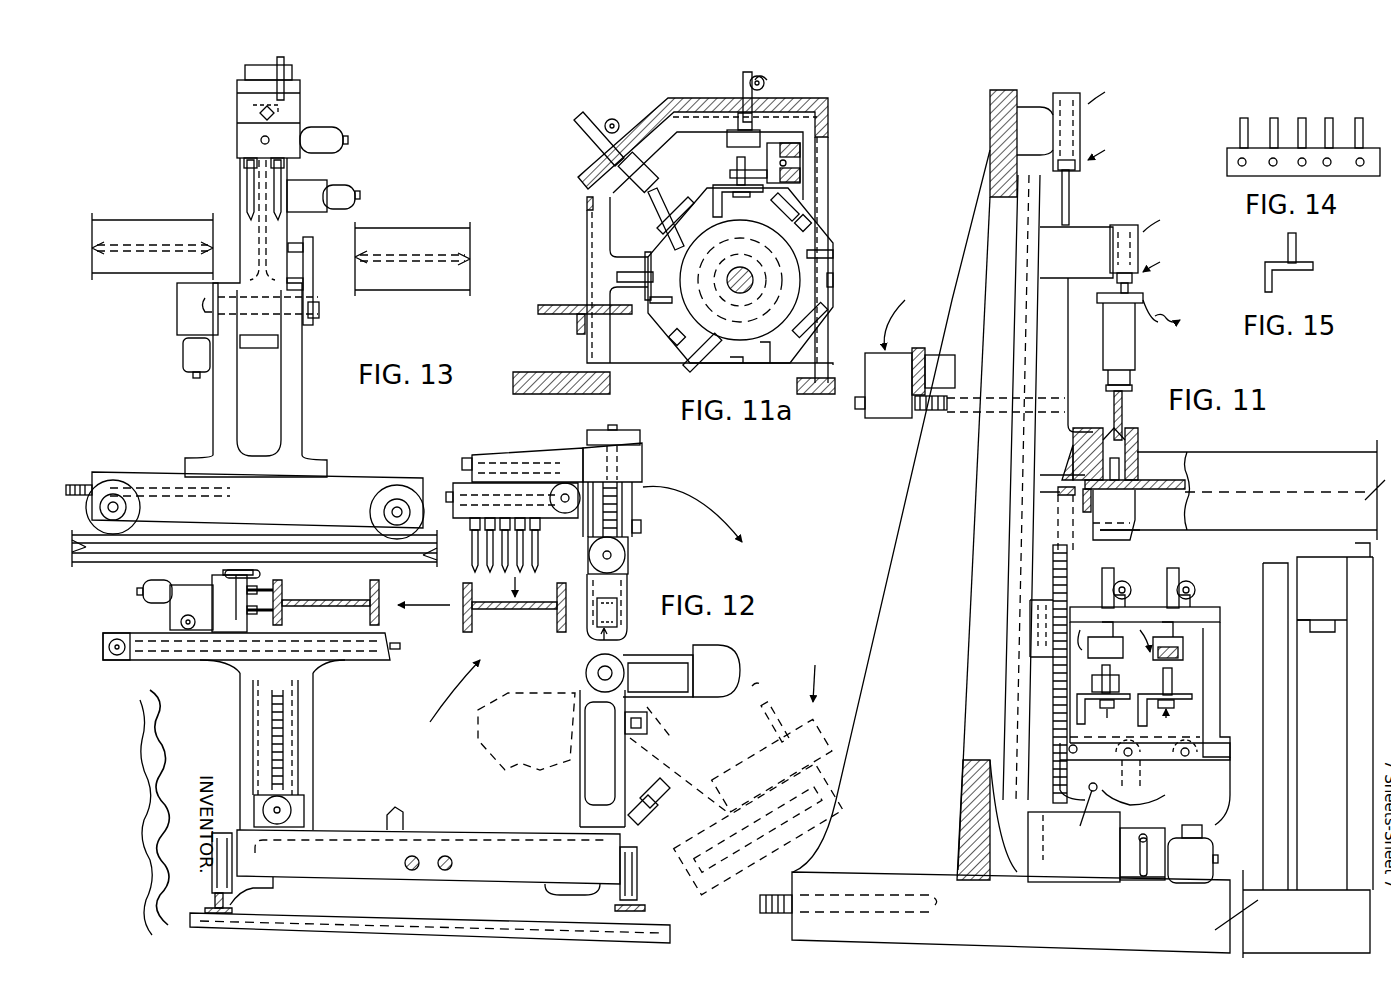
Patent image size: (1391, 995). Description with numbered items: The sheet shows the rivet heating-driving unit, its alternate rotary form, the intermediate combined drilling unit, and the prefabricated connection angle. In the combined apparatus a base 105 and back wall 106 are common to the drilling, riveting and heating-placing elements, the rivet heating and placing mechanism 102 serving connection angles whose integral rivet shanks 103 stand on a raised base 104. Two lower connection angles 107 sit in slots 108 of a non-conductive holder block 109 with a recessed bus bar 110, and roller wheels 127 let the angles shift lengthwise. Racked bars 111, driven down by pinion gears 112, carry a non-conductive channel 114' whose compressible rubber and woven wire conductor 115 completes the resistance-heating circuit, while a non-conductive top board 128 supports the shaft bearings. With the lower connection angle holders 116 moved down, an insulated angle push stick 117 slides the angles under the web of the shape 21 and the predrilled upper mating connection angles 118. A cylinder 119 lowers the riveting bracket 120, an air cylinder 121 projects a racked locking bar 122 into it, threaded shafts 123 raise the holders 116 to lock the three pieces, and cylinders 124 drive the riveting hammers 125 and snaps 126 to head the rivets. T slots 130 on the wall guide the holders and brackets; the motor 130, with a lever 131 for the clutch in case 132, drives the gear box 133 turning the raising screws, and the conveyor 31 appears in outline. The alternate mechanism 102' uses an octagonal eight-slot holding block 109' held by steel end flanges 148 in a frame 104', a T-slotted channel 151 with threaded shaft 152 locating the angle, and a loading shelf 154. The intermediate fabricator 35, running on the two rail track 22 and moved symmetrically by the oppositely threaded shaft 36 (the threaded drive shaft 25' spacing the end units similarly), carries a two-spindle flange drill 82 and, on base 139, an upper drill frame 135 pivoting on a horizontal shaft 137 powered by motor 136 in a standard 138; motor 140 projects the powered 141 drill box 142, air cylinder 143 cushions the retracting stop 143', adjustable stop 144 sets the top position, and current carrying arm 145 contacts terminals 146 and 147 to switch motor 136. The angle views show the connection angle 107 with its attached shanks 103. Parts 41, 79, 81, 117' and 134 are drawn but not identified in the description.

In FIG. 13, the raw shapes 21 is at (415, 228).
In FIG. 12, the raw shapes 21 is at (366, 598).
In FIG. 12, the two rail track 22 is at (638, 906).
In FIG. 12, the threaded drive shaft 25' is at (390, 862).
In FIG. 11, the dual conveyor belts 31 is at (1330, 598).
In FIG. 12, the intermediate combined drilling fabricators 35 is at (432, 697).
In FIG. 12, the oppositely threaded shaft 36 is at (452, 863).
In FIG. 12, the stop 41 is at (405, 818).
In FIG. 12, the bed plate 79 is at (328, 644).
In FIG. 12, the support column 81 is at (283, 684).
In FIG. 12, the adjustable-centre two-spindle flange drill 82 is at (236, 610).
In FIG. 11, the rivet heating and placing mechanism 102 is at (1167, 682).
In FIG. 11A, the rotary rivet heating and assembling mechanism 102' is at (746, 240).
In FIG. 11A, the integral rivet shanks 103 is at (658, 220).
In FIG. 14, the integral rivet shanks 103 is at (1288, 120).
In FIG. 11, the integral rivet shanks 103 is at (1172, 684).
In FIG. 11, the raised base 104 is at (1158, 791).
In FIG. 11A, the frame 104' is at (734, 241).
In FIG. 11A, the base 105 is at (548, 372).
In FIG. 11, the base 105 is at (1085, 926).
In FIG. 11, the back wall 106 is at (980, 540).
In FIG. 11A, the lower connection angles 107 is at (728, 174).
In FIG. 14, the lower connection angles 107 is at (1228, 156).
In FIG. 15, the lower connection angles 107 is at (1303, 272).
In FIG. 11, the lower connection angles 107 is at (1140, 493).
In FIG. 11A, the slots 108 is at (835, 246).
In FIG. 11, the non-conductive holder block 109 is at (1153, 719).
In FIG. 11A, the eight slot non-conductive angle holding block 109' is at (738, 201).
In FIG. 11A, the recessed bus bar 110 is at (836, 276).
In FIG. 11, the recessed bus bar 110 is at (1193, 697).
In FIG. 11A, the racked bars 111 is at (590, 130).
In FIG. 11, the racked bars 111 is at (1182, 570).
In FIG. 11A, the pinion gears 112 is at (612, 118).
In FIG. 11, the pinion gears 112 is at (1194, 586).
In FIG. 11A, the non-conductive channel 114' is at (639, 184).
In FIG. 11, the compressible rubber and woven wire conductor 115 is at (1190, 658).
In FIG. 11, the lower connection angle holders 116 is at (1122, 538).
In FIG. 11, the insulated angle push stick 117 is at (1093, 674).
In FIG. 11A, the rod 117' is at (714, 162).
In FIG. 11, the predrilled upper mating connection angles 118 is at (1143, 468).
In FIG. 11, the cylinder 119 is at (1082, 132).
In FIG. 11, the riveting bracket 120 is at (1085, 268).
In FIG. 11, the air cylinder 121 is at (905, 402).
In FIG. 11, the racked locking bar 122 is at (928, 415).
In FIG. 11, the threaded shafts 123 is at (1070, 560).
In FIG. 11, the cylinders 124 is at (1140, 248).
In FIG. 11, the reciprocating riveting hammers 125 is at (1130, 349).
In FIG. 11, the snaps 126 is at (1124, 414).
In FIG. 11, the roller wheels 127 is at (1128, 775).
In FIG. 11A, the non-conductive top board 128 is at (706, 96).
In FIG. 11, the non-conductive top board 128 is at (1158, 596).
In FIG. 11, the T slots 130 is at (1213, 842).
In FIG. 11, the lever 131 is at (1128, 830).
In FIG. 11, the clutch case 132 is at (1126, 878).
In FIG. 11, the common gear box 133 is at (1085, 864).
In FIG. 11, the handle 134 is at (1106, 818).
In FIG. 13, the upper drill frame 135 is at (243, 190).
In FIG. 12, the upper drill frame 135 is at (636, 508).
In FIG. 13, the motor 136 is at (183, 348).
In FIG. 13, the horizontal shaft 137 is at (321, 312).
In FIG. 12, the horizontal shaft 137 is at (612, 658).
In FIG. 13, the standard 138 is at (298, 413).
In FIG. 12, the standard 138 is at (580, 778).
In FIG. 13, the base 139 is at (300, 516).
In FIG. 12, the base 139 is at (540, 872).
In FIG. 13, the motor 140 is at (345, 185).
In FIG. 12, the motor 140 is at (622, 553).
In FIG. 13, the drill box power unit 141 is at (330, 128).
In FIG. 12, the drill box power unit 141 is at (716, 671).
In FIG. 13, the drill box 142 is at (237, 134).
In FIG. 12, the drill box 142 is at (468, 512).
In FIG. 12, the compressed air cylinder 143 is at (646, 801).
In FIG. 12, the retracting stop 143' is at (660, 527).
In FIG. 12, the adjustable stop 144 is at (570, 696).
In FIG. 13, the current carrying arm 145 is at (314, 246).
In FIG. 12, the current carrying arm 145 is at (618, 592).
In FIG. 12, the terminal 146 is at (618, 612).
In FIG. 12, the terminal 147 is at (648, 722).
In FIG. 11A, the steel end flanges 148 is at (705, 242).
In FIG. 11A, the T-slotted channel 151 is at (803, 152).
In FIG. 11A, the threaded shaft 152 is at (803, 172).
In FIG. 11A, the loading shelf 154 is at (571, 302).